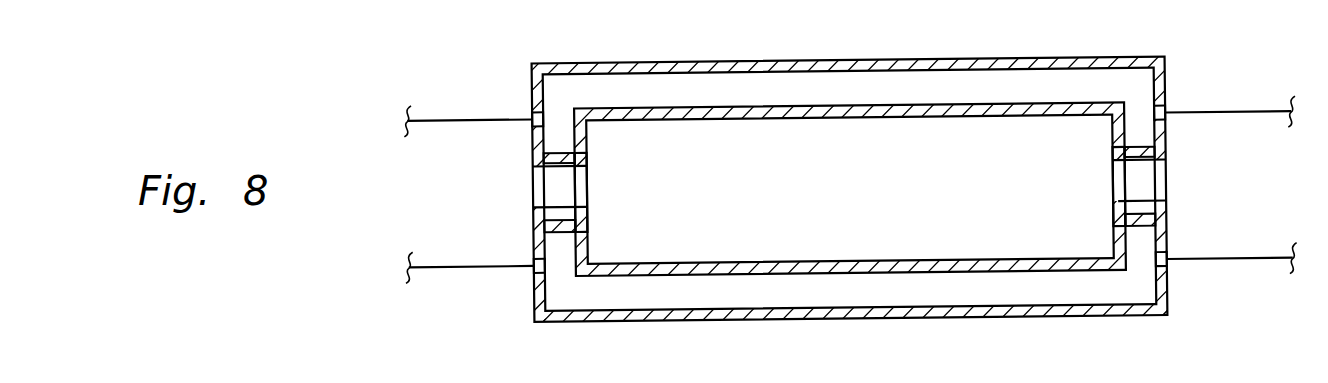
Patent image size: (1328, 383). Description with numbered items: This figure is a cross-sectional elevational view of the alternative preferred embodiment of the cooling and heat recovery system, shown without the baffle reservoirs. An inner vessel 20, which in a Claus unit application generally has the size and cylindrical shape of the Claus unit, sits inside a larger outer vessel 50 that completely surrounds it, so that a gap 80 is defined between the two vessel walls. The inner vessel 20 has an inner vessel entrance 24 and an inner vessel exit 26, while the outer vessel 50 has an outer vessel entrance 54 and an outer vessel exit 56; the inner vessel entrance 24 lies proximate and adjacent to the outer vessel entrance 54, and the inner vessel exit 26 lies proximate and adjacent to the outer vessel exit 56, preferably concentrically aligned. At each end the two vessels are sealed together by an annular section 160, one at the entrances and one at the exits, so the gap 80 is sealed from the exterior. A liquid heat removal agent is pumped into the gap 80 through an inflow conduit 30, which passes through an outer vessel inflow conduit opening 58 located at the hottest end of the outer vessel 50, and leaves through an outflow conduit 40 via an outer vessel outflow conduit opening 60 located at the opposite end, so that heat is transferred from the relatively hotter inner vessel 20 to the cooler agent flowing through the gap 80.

The inner vessel 20 is at (843, 258).
The inner vessel entrance 24 is at (582, 208).
The inner vessel exit 26 is at (1163, 202).
The inflow conduit 30 is at (432, 118).
The outflow conduit 40 is at (1253, 110).
The outer vessel 50 is at (843, 320).
The outer vessel entrance 54 is at (538, 183).
The outer vessel exit 56 is at (1163, 174).
The outer vessel inflow conduit opening 58 is at (533, 122).
The outer vessel outflow conduit opening 60 is at (1166, 112).
The gap 80 is at (557, 93).
The annular section 160 is at (566, 163).